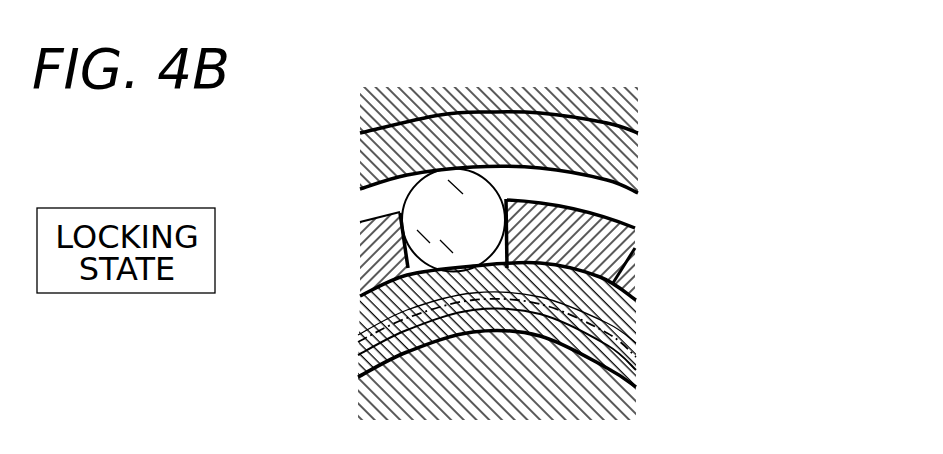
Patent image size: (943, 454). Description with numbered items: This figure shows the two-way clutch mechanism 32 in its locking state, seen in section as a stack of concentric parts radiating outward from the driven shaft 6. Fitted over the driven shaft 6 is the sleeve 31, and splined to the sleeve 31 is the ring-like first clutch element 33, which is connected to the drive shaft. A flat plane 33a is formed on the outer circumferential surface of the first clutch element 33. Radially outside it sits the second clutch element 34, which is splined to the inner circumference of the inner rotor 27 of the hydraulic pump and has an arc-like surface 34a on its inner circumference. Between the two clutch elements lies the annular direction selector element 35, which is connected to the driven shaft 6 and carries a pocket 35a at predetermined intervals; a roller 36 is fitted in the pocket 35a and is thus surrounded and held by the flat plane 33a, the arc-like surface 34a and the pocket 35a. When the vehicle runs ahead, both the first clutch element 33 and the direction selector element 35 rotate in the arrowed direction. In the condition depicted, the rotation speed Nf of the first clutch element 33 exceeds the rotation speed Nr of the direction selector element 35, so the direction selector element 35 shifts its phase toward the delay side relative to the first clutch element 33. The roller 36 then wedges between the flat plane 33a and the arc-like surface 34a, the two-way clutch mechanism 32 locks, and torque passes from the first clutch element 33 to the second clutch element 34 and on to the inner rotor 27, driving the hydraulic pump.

The inner rotor 27 is at (437, 100).
The second clutch element 34 is at (358, 165).
The arc-like surface 34a is at (384, 187).
The direction selector element 35 is at (372, 260).
The pocket 35a is at (496, 214).
The roller 36 is at (458, 236).
The first clutch element 33 is at (372, 311).
The flat plane 33a is at (543, 267).
The sleeve 31 is at (362, 357).
The driven shaft 6 is at (502, 398).
The two-way clutch mechanism 32 is at (662, 150).
The rotation speed of the direction selector element Nr is at (647, 268).
The rotation speed of the first clutch element Nf is at (633, 313).